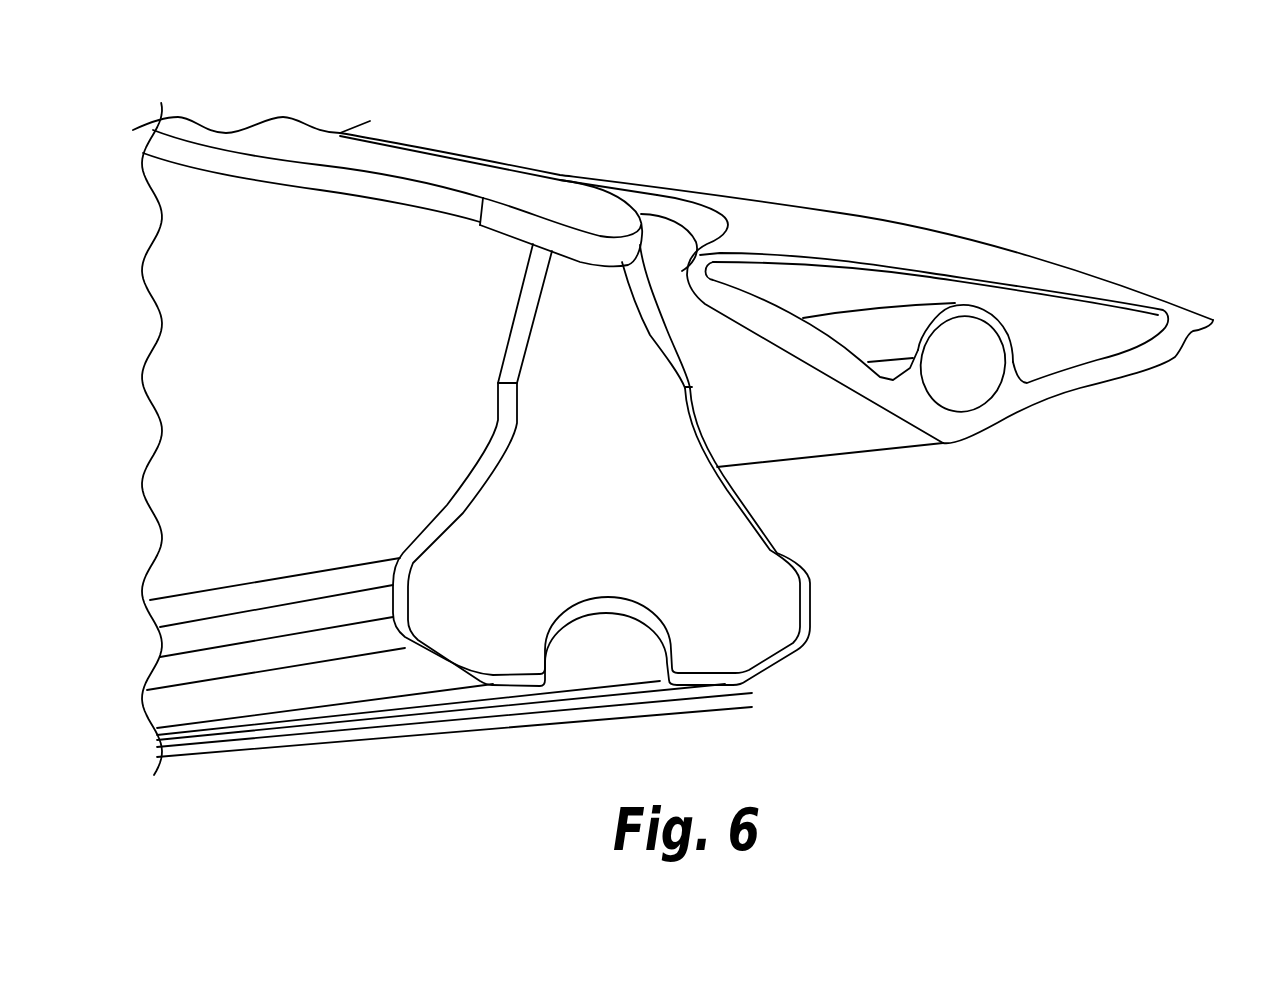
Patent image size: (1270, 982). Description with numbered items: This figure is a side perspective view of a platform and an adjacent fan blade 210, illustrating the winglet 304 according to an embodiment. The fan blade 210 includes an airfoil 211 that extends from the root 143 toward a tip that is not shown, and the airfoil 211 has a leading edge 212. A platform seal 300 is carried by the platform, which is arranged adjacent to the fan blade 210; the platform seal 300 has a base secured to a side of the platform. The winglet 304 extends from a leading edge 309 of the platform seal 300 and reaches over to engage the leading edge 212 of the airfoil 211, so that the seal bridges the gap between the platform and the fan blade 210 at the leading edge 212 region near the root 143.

The fan blade 210 is at (407, 118).
The airfoil 211 is at (447, 177).
The leading edge 212 is at (607, 253).
The platform seal 300 is at (747, 207).
The leading edge of the platform seal 309 is at (823, 247).
The winglet 304 is at (703, 291).
The root 143 is at (770, 603).